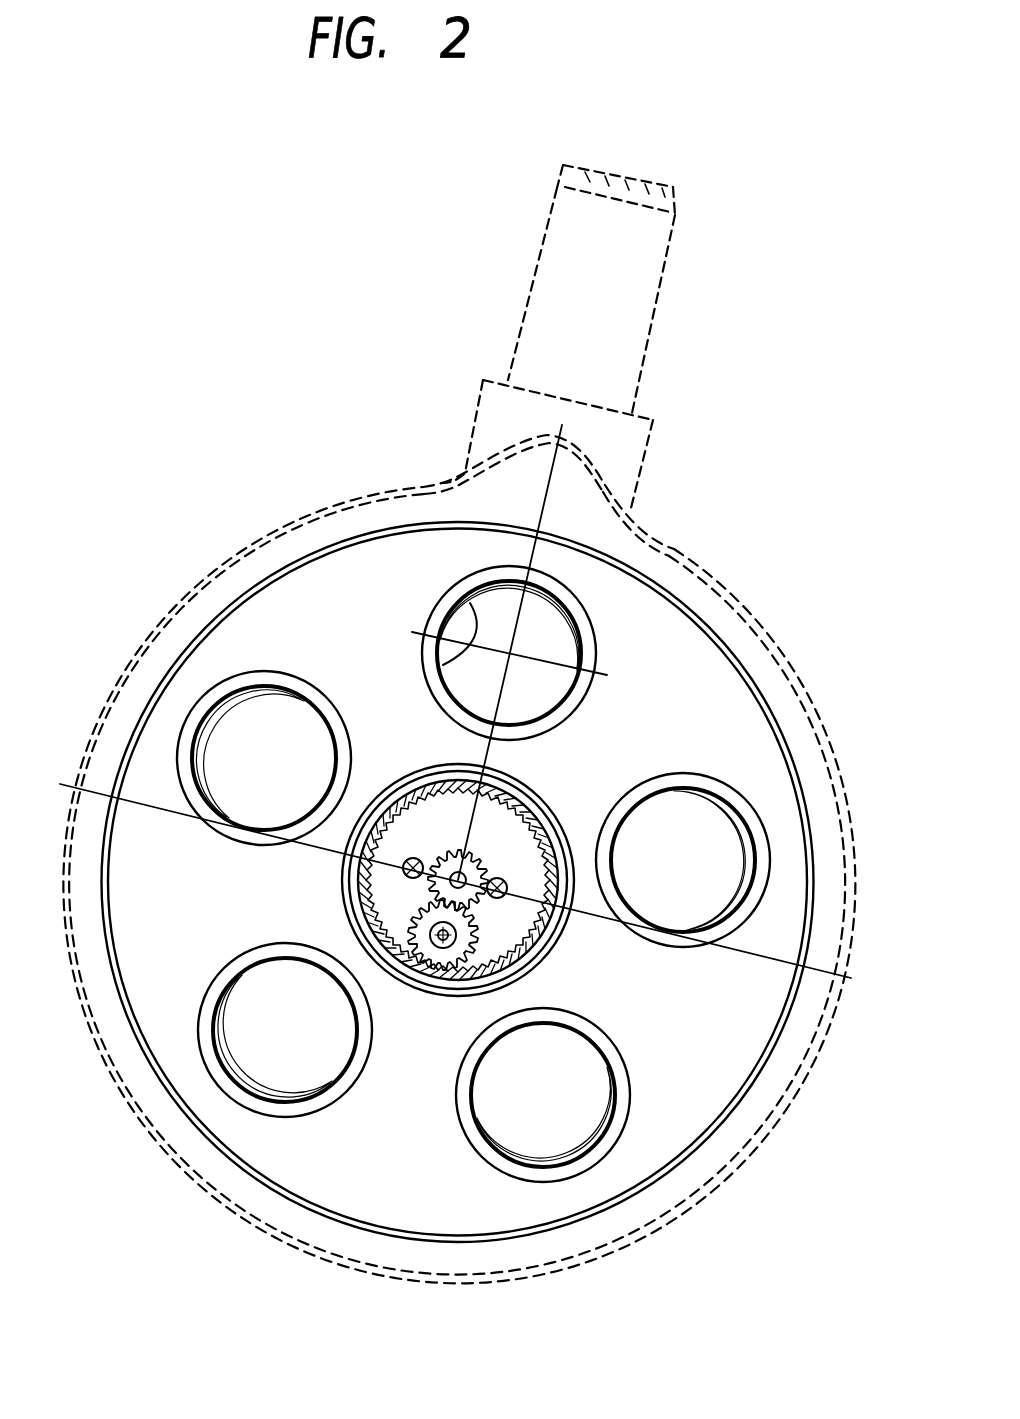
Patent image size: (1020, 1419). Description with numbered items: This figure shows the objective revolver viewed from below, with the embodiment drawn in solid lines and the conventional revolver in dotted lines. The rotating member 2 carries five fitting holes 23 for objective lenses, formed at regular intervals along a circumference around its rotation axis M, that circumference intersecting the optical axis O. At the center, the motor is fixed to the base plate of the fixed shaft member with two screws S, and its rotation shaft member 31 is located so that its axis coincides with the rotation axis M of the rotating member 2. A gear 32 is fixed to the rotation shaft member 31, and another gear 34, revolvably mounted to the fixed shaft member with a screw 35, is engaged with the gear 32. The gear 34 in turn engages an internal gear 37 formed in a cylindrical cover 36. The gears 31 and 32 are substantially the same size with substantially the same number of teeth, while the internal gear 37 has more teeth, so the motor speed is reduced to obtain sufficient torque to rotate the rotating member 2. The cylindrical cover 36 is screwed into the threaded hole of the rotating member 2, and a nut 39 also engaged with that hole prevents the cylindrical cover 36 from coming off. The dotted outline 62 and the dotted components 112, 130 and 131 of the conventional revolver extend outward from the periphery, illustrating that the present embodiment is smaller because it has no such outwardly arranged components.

The rotating member 2 is at (701, 1106).
The fitting holes 23 is at (470, 600).
The rotation shaft member 31 is at (440, 882).
The gear 32 is at (430, 905).
The gear 34 is at (397, 970).
The screw 35 is at (417, 970).
The cylindrical cover 36 is at (447, 990).
The internal gear 37 is at (440, 983).
The nut 39 is at (540, 958).
The casing 62 is at (740, 667).
The conventional revolver component 112 is at (725, 596).
The conventional revolver component 130 is at (630, 297).
The conventional revolver component 131 is at (620, 448).
The rotation axis M is at (458, 880).
The screws S is at (403, 869).
The optical axis O is at (510, 653).